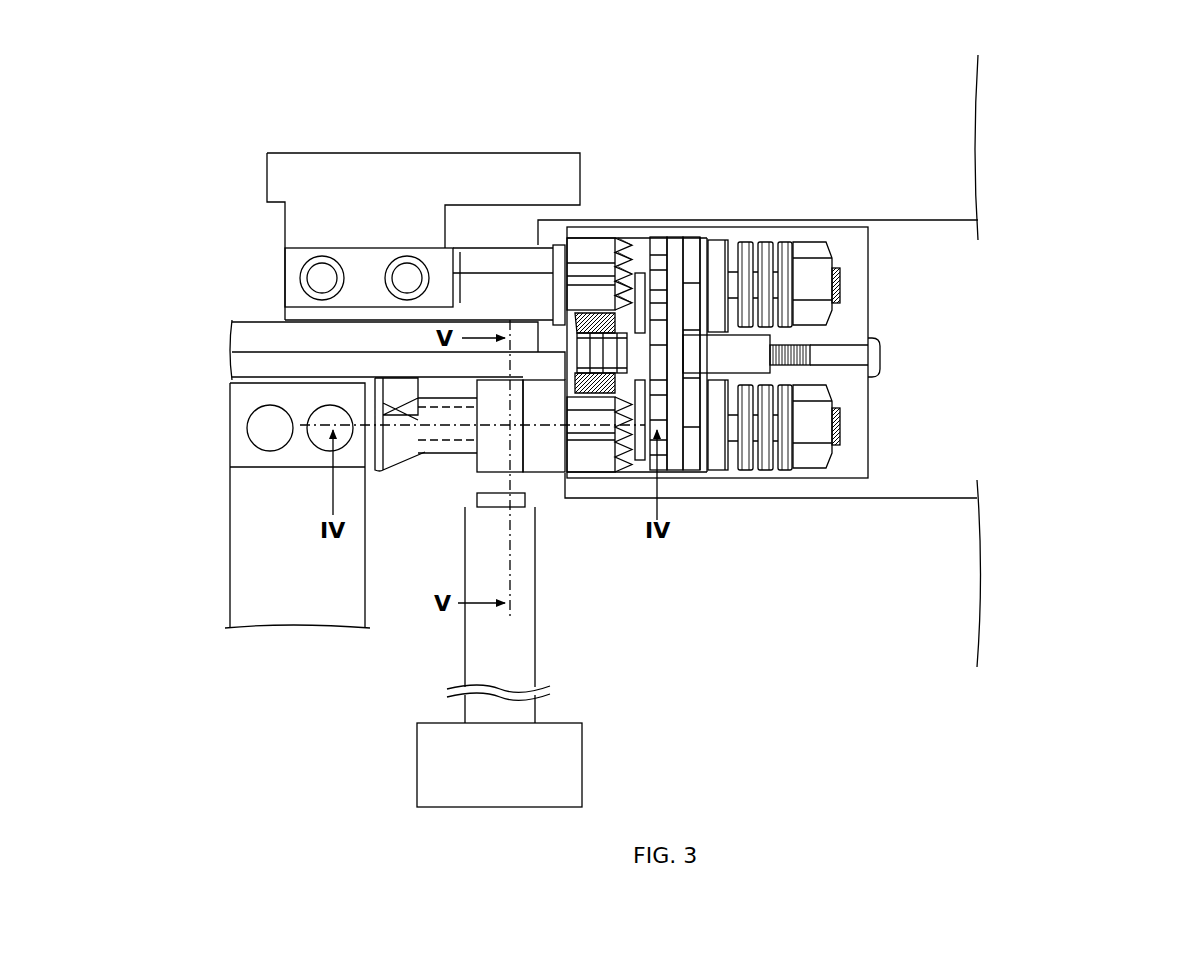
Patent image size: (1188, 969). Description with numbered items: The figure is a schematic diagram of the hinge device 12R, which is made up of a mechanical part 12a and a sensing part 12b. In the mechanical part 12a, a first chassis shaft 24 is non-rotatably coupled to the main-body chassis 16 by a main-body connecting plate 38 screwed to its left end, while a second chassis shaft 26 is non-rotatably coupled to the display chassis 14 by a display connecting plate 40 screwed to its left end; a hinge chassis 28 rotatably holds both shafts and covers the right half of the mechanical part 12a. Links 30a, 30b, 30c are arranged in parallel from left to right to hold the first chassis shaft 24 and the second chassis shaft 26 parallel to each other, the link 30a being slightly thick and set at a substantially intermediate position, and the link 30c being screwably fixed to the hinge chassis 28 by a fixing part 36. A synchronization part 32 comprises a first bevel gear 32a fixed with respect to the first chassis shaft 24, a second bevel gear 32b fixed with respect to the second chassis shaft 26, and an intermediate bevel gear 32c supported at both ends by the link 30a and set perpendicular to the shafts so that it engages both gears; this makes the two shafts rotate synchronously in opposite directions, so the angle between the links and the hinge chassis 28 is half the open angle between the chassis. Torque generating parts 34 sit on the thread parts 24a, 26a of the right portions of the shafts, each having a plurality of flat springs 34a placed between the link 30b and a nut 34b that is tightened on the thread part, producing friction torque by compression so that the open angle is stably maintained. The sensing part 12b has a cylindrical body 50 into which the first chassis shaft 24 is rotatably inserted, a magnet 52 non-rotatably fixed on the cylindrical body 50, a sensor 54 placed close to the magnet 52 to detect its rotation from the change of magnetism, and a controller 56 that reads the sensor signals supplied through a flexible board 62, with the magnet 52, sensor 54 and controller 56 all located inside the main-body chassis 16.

The hinge device 12R is at (1107, 246).
The mechanical part 12a is at (952, 358).
The sensing part 12b is at (705, 645).
The display chassis 14 is at (953, 147).
The main-body chassis 16 is at (958, 580).
The first chassis shaft 24 is at (432, 440).
The thread part 24a is at (842, 425).
The second chassis shaft 26 is at (505, 285).
The thread part 26a is at (842, 283).
The hinge chassis 28 is at (870, 310).
The link 30a is at (590, 248).
The link 30b is at (660, 245).
The link 30c is at (698, 245).
The synchronization part 32 is at (652, 212).
The first bevel gear 32a is at (642, 450).
The second bevel gear 32b is at (641, 292).
The intermediate bevel gear 32c is at (600, 377).
The torque generating part 34 is at (795, 212).
The flat spring 34a is at (782, 462).
The nut 34b is at (818, 447).
The fixing part 36 is at (857, 353).
The main-body connecting plate 38 is at (240, 483).
The display connecting plate 40 is at (267, 172).
The cylindrical body 50 is at (413, 455).
The magnet 52 is at (518, 458).
The sensor 54 is at (487, 503).
The controller 56 is at (560, 765).
The flexible board 62 is at (525, 655).